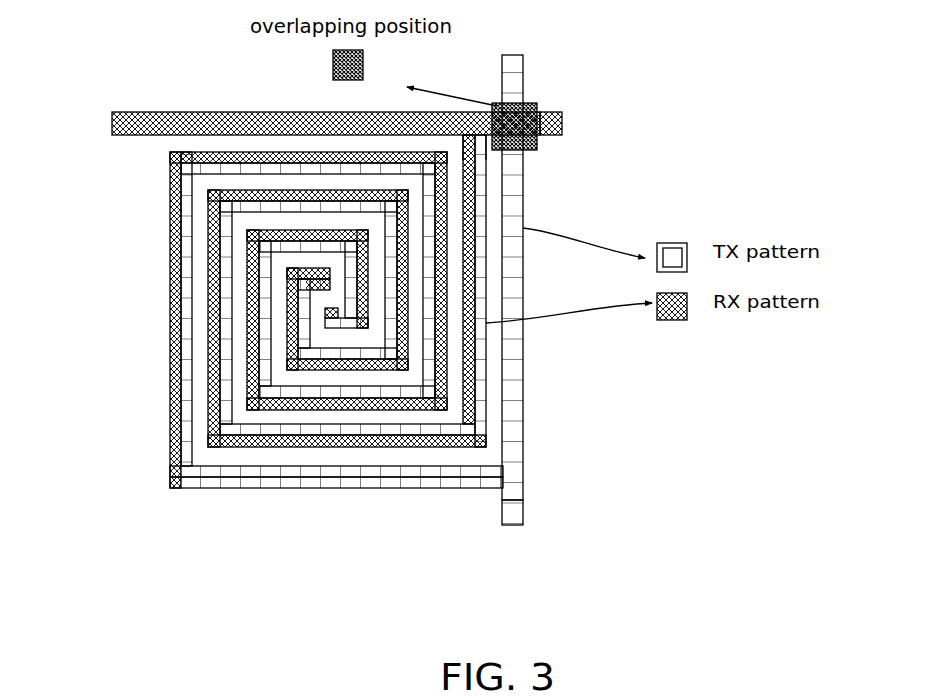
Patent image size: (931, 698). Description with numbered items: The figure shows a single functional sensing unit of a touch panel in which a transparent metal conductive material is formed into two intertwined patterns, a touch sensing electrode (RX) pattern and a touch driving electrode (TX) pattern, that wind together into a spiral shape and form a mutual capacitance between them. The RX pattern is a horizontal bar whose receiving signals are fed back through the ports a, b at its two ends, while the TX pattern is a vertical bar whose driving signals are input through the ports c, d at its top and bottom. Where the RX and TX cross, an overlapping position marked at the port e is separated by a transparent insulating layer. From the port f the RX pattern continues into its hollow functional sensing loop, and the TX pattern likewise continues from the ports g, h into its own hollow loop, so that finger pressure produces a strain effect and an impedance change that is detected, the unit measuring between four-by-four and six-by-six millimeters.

The port a is at (107, 123).
The port b is at (562, 123).
The port c is at (505, 55).
The port d is at (513, 527).
The port e is at (527, 150).
The port f is at (468, 138).
The port g is at (505, 470).
The port h is at (502, 480).